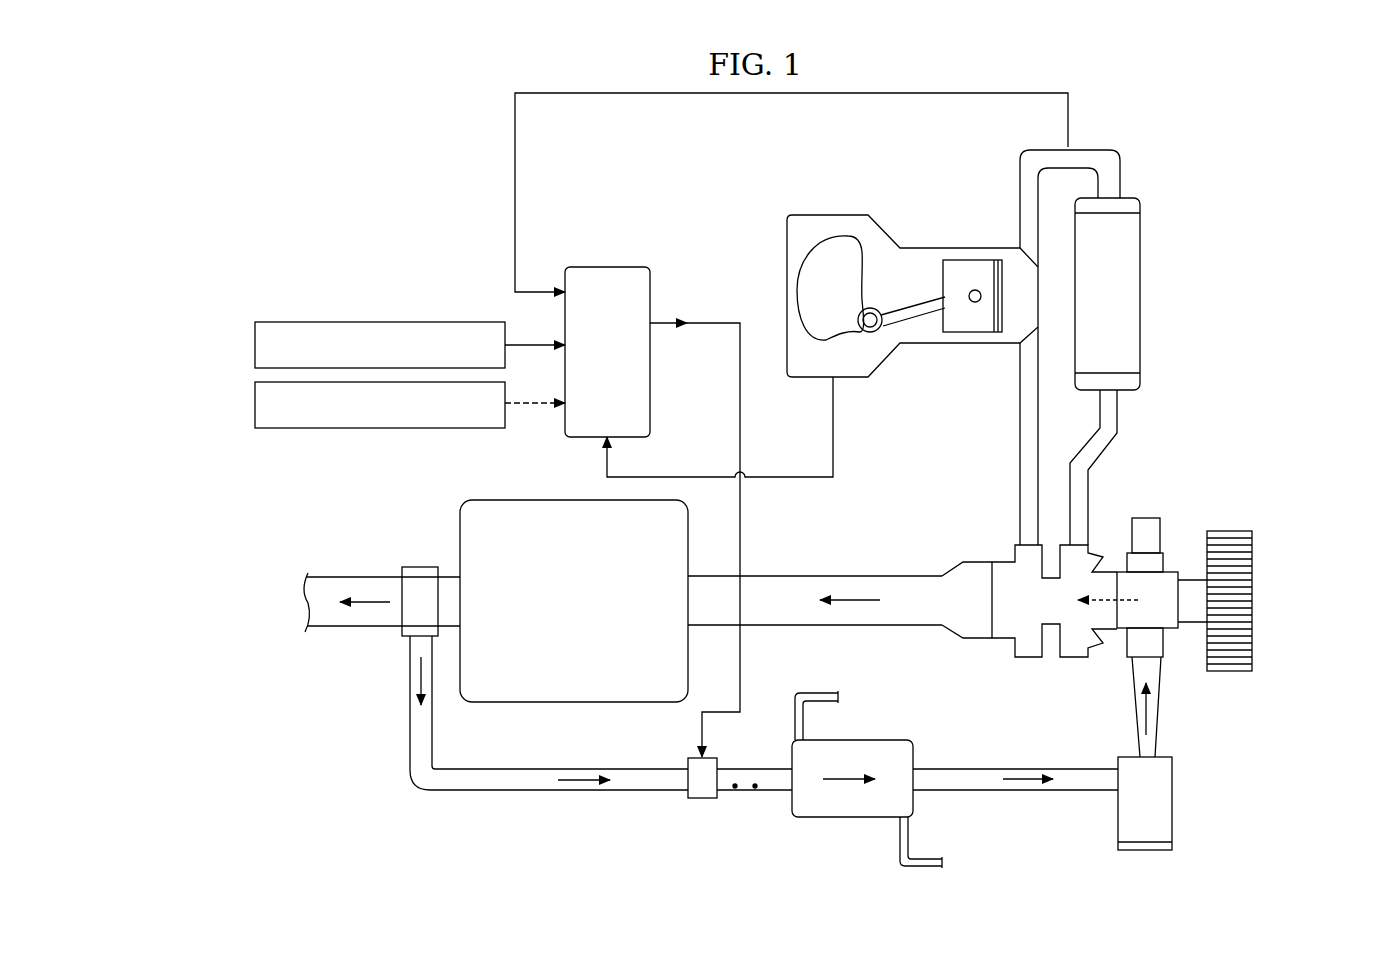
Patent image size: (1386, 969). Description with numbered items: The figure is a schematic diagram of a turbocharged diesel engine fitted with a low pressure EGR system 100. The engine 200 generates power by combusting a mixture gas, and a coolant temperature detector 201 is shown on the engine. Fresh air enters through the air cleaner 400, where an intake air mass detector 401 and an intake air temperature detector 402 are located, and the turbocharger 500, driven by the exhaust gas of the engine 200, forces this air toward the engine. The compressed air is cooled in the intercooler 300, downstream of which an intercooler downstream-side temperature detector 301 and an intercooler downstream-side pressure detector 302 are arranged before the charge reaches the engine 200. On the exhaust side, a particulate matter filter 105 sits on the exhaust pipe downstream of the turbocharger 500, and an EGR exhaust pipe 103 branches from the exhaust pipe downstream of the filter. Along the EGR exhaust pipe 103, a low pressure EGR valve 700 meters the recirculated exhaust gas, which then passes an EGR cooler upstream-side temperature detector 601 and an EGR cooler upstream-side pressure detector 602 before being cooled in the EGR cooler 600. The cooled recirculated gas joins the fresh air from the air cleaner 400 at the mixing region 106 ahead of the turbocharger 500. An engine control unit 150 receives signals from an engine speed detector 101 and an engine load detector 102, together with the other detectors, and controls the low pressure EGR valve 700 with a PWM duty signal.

The low pressure EGR system 100 is at (432, 806).
The engine speed detector 101 is at (255, 345).
The engine load detector 102 is at (255, 405).
The EGR exhaust pipe 103 is at (643, 791).
The particulate matter filter 105 is at (460, 520).
The mixing region 106 is at (1178, 560).
The engine control unit 150 is at (608, 267).
The engine 200 is at (853, 214).
The coolant temperature detector 201 is at (838, 378).
The intercooler 300 is at (1140, 290).
The intercooler downstream-side temperature detector 301 is at (1065, 147).
The intercooler downstream-side pressure detector 302 is at (1075, 147).
The air cleaner 400 is at (1242, 530).
The intake air mass detector 401 is at (1260, 570).
The intake air temperature detector 402 is at (1260, 601).
The turbocharger 500 is at (986, 553).
The EGR cooler 600 is at (845, 818).
The EGR cooler upstream-side temperature detector 601 is at (734, 789).
The EGR cooler upstream-side pressure detector 602 is at (755, 789).
The low pressure EGR valve 700 is at (700, 799).